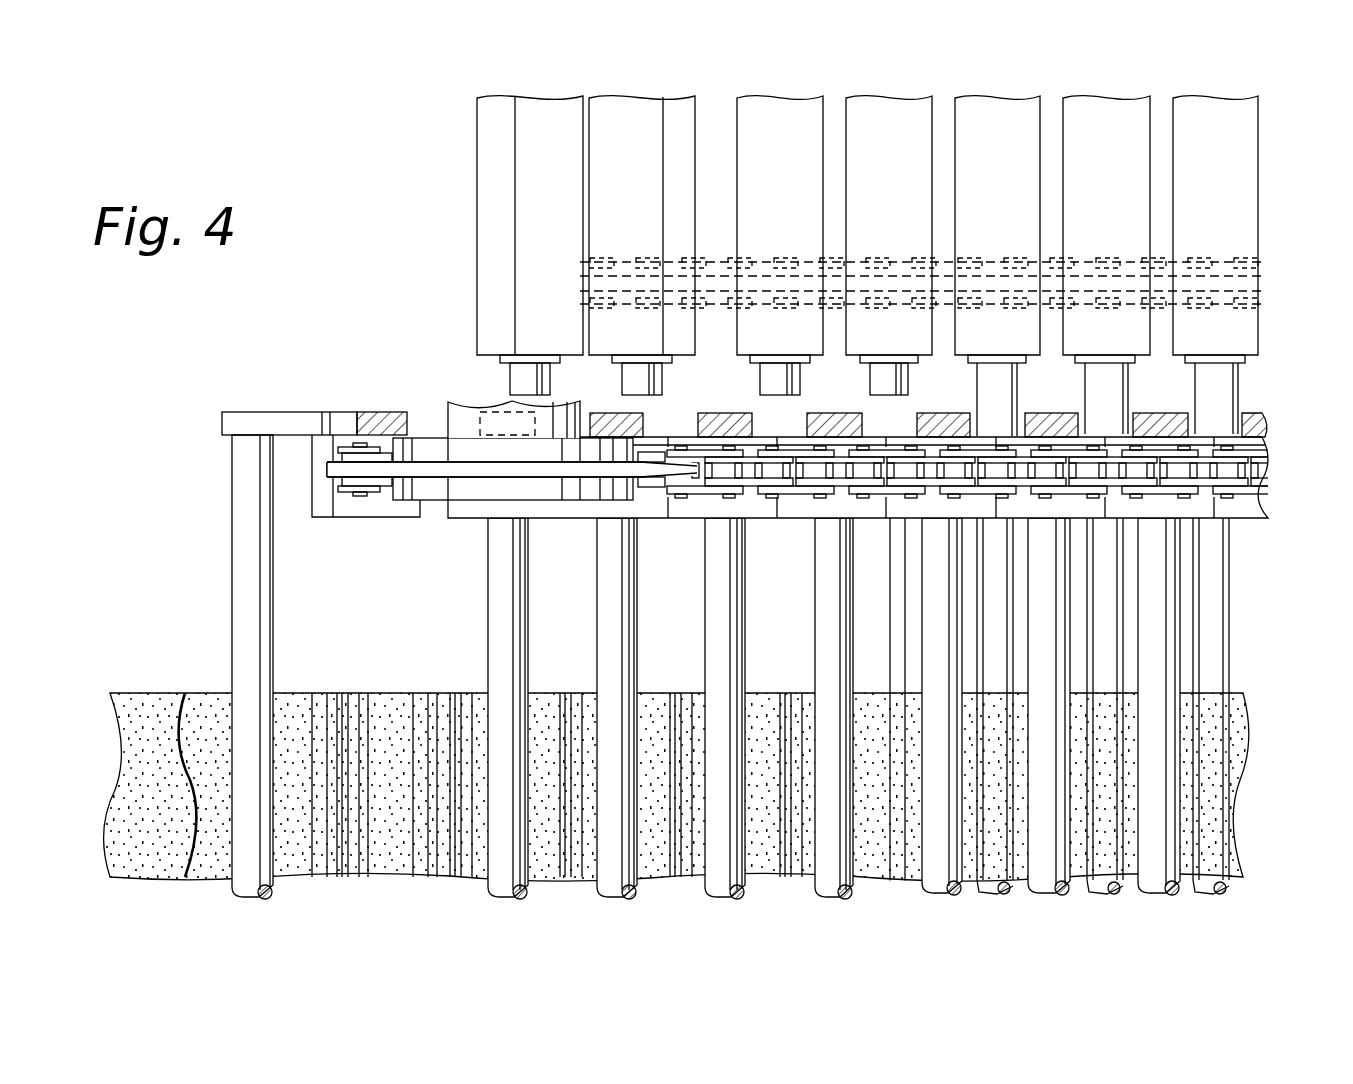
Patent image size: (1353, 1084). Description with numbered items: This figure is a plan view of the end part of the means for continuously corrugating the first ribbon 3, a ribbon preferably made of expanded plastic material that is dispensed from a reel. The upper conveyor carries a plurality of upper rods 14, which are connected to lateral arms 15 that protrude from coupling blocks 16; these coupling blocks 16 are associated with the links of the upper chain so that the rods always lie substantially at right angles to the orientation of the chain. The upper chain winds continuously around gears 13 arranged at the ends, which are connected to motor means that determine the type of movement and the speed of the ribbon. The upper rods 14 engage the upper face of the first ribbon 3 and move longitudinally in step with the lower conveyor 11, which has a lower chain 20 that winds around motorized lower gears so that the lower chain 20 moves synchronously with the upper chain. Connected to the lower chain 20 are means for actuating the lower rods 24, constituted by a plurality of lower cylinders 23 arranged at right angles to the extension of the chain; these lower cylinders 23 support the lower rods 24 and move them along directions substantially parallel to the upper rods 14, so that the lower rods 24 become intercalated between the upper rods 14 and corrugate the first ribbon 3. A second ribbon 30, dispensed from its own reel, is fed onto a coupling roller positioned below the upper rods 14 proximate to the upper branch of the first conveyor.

The first ribbon 3 is at (215, 715).
The second ribbon 30 is at (140, 715).
The lower conveyor 11 is at (850, 229).
The lower cylinders 23 is at (478, 187).
The lower chain 20 is at (1200, 282).
The lower rods 24 is at (625, 381).
The lateral arms 15 is at (718, 415).
The coupling blocks 16 is at (700, 517).
The gears 13 is at (447, 485).
The upper rods 14 is at (258, 750).